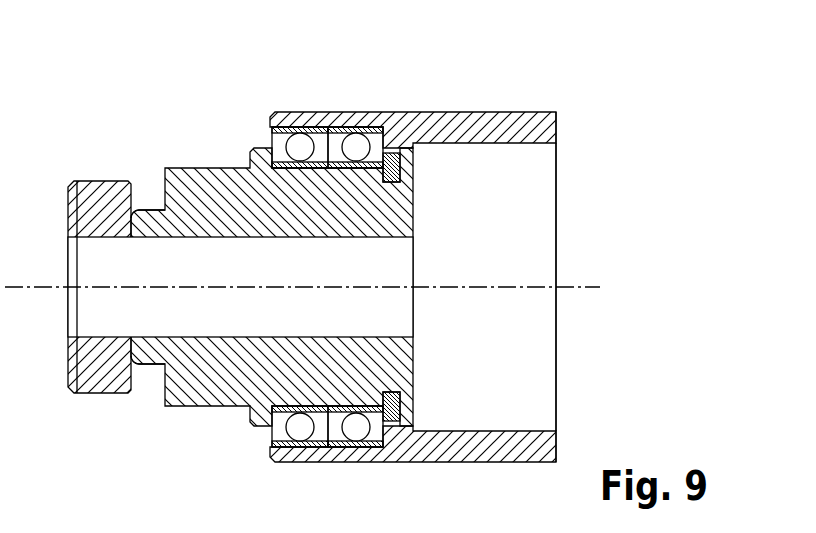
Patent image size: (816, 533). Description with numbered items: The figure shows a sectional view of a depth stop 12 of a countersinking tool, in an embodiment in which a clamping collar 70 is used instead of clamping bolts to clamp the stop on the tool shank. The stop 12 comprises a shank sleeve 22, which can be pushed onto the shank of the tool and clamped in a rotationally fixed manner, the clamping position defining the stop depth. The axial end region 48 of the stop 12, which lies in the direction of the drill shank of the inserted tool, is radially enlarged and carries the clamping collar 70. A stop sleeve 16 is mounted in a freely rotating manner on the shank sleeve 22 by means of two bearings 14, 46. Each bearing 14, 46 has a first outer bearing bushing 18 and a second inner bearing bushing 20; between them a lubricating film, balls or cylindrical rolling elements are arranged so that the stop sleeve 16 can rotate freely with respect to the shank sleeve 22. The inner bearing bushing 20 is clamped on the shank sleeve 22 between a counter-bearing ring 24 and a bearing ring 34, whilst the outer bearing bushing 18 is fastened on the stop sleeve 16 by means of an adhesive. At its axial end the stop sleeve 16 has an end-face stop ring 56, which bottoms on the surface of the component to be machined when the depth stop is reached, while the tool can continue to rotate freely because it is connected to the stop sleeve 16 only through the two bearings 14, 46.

The stop 12 is at (638, 165).
The bearing 14 is at (297, 112).
The stop sleeve 16 is at (453, 100).
The first outer bearing bushing 18 is at (315, 448).
The second inner bearing bushing 20 is at (263, 428).
The shank sleeve 22 is at (151, 198).
The counter-bearing ring 24 is at (256, 149).
The bearing ring 34 is at (392, 155).
The bearing 46 is at (352, 112).
The axial end region 48 is at (70, 187).
The end-face stop ring 56 is at (556, 130).
The clamping collar 70 is at (107, 192).